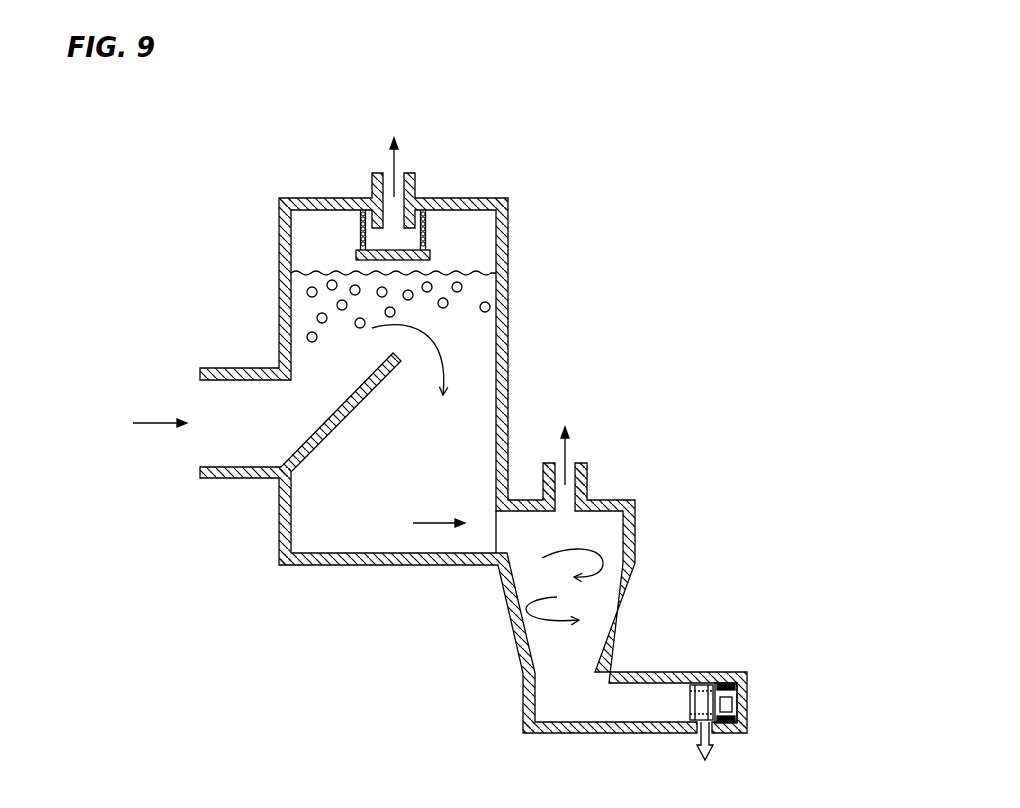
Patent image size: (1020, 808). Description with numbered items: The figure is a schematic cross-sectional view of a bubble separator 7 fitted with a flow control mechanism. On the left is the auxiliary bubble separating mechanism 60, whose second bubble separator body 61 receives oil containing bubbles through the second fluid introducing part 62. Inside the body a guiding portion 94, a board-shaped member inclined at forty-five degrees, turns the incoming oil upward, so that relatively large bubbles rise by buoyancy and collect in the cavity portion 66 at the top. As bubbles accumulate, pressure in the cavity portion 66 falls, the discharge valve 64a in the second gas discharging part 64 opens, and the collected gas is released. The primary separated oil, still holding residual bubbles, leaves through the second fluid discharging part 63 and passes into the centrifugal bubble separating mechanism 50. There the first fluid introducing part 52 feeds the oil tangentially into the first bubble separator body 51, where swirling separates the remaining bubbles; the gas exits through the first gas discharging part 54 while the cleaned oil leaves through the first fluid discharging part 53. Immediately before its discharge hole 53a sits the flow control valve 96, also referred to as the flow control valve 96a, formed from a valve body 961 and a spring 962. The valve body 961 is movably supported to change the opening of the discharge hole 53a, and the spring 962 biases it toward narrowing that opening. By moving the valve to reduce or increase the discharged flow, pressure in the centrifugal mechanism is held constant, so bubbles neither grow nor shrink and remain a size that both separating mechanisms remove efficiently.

The bubble separator 7 is at (633, 97).
The auxiliary bubble separating mechanism 60 is at (411, 124).
The second bubble separator body 61 is at (292, 271).
The second fluid introducing part 62 is at (216, 438).
The second gas discharging part 64 is at (387, 176).
The discharge valve 64a is at (430, 253).
The cavity portion 66 is at (480, 218).
The guiding portion 94 is at (338, 421).
The centrifugal bubble separating mechanism 50 is at (591, 392).
The first bubble separator body 51 is at (628, 535).
The first fluid introducing part 52 is at (488, 535).
The first gas discharging part 54 is at (570, 463).
The second fluid discharging part 63 is at (505, 533).
The first fluid discharging part 53 is at (640, 690).
The discharge hole 53a is at (710, 724).
The flow control valve 96 is at (728, 683).
The flow control valve 96a is at (703, 678).
The valve body 961 is at (738, 696).
The spring 962 is at (738, 699).